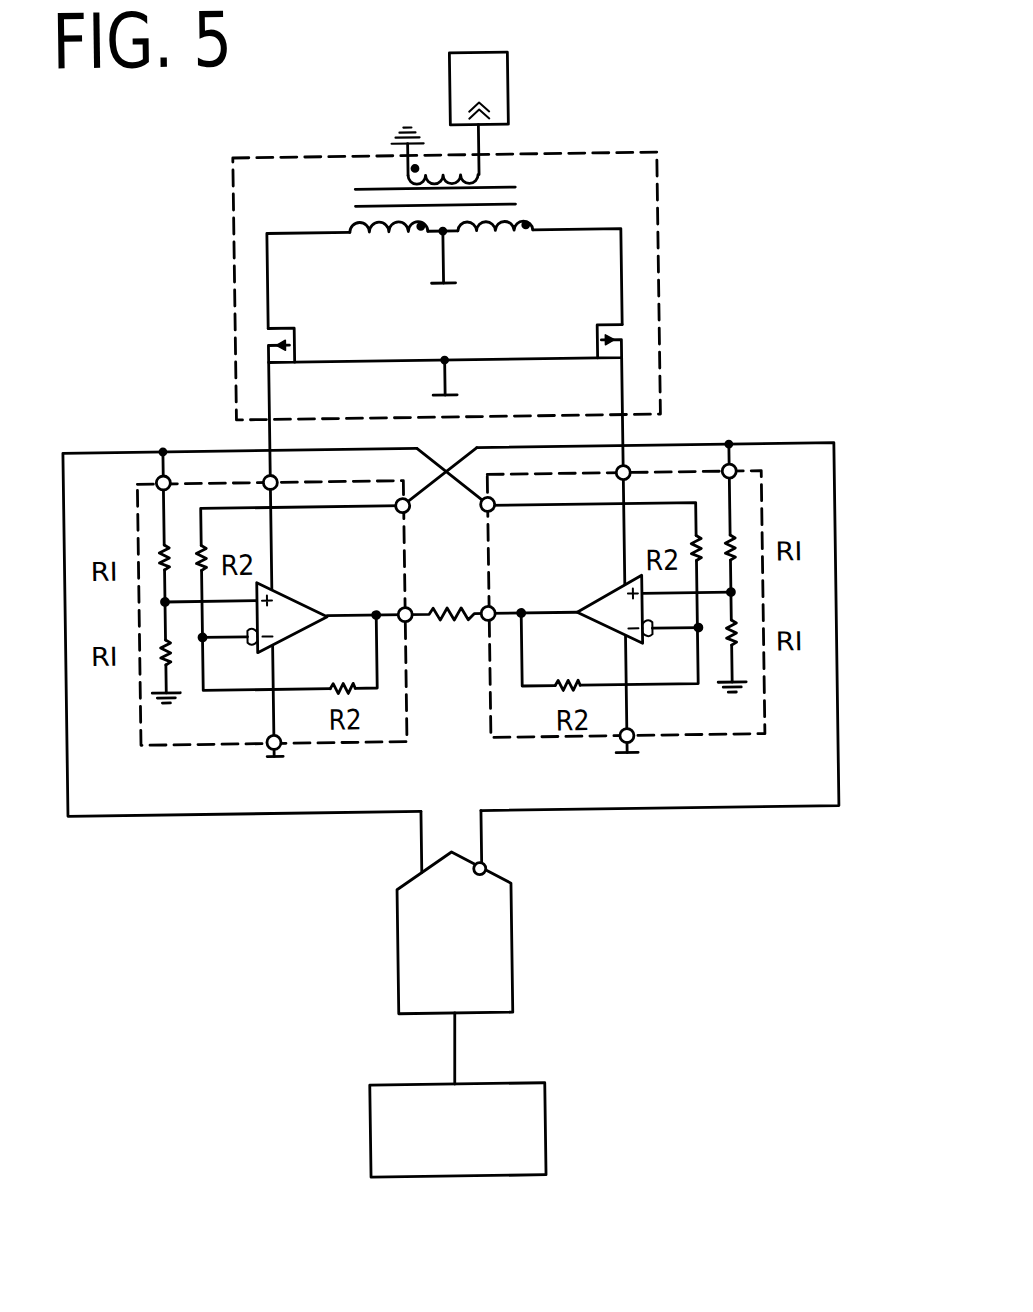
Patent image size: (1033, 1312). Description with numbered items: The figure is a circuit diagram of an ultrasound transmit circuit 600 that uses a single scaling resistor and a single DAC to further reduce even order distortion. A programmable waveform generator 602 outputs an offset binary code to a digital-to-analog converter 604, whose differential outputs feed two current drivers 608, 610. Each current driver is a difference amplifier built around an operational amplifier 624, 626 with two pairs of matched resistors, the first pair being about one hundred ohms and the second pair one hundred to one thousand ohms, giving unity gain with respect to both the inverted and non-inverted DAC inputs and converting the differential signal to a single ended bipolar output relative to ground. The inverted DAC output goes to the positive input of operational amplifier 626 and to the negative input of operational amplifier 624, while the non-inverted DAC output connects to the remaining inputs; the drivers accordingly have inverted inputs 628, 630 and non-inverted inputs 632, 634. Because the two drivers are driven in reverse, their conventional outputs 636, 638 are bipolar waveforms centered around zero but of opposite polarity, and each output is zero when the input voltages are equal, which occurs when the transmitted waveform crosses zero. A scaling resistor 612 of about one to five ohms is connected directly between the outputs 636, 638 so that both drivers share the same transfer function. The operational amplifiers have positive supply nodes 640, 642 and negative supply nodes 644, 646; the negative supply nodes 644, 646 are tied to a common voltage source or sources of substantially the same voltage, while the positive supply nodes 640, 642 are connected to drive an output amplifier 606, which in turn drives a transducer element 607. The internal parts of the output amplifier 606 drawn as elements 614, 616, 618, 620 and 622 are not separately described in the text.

The ultrasound transmit circuit 600 is at (105, 147).
The programmable waveform generator 602 is at (538, 1132).
The digital-to-analog converter 604 is at (501, 1001).
The output amplifier 606 is at (663, 162).
The transducer element 607 is at (515, 80).
The current driver 608 is at (139, 742).
The current driver 610 is at (765, 740).
The scaling resistor 612 is at (455, 622).
The transformer 614 is at (355, 229).
The first switching transistor 616 is at (300, 325).
The second switching transistor 618 is at (600, 327).
The second voltage node V2 620 is at (445, 376).
The first voltage node V1 622 is at (447, 268).
The operational amplifier 624 is at (296, 609).
The operational amplifier 626 is at (601, 601).
The inverted input 628 is at (404, 512).
The inverted input 630 is at (491, 513).
The non-inverted input 632 is at (158, 482).
The non-inverted input 634 is at (738, 478).
The output 636 is at (403, 622).
The output 638 is at (490, 622).
The positive supply node 640 is at (266, 475).
The positive supply node 642 is at (630, 470).
The negative supply node 644 is at (266, 746).
The negative supply node 646 is at (633, 742).